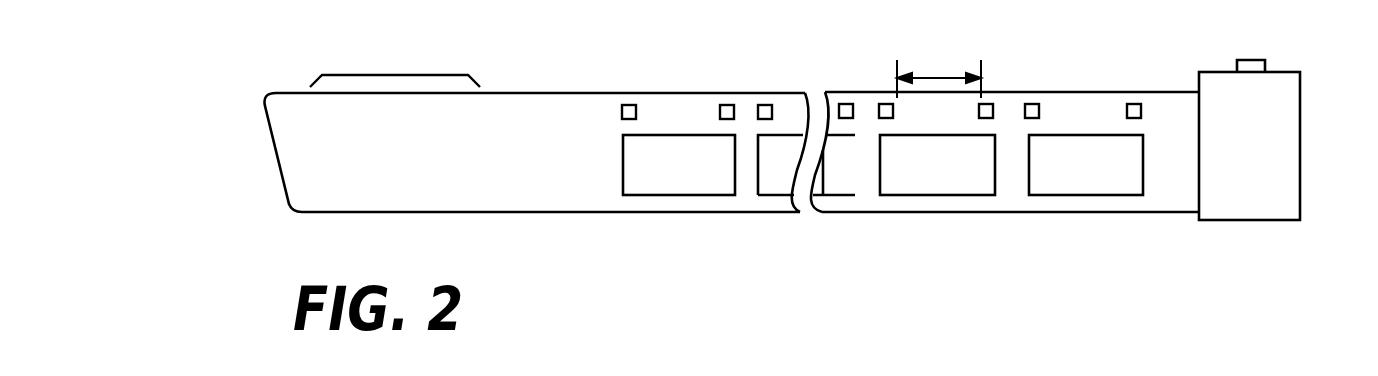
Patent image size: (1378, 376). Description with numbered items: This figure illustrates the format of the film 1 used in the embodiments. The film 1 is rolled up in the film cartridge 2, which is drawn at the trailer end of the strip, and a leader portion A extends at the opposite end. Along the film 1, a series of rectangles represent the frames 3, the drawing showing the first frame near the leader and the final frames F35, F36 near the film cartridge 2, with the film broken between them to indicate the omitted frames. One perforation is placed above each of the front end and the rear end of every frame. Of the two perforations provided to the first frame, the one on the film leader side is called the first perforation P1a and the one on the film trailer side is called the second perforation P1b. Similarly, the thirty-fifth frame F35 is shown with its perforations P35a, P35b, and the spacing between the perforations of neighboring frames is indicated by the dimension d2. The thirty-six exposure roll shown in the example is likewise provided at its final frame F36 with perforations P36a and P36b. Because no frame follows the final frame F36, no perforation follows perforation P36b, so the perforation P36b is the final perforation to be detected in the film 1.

The film 1 is at (547, 93).
The film cartridge 2 is at (1287, 72).
The frames 3 is at (623, 166).
The leader portion of film A is at (395, 62).
The first perforation P1a is at (638, 111).
The second perforation P1b is at (727, 105).
The perforation for frame 35 P35a is at (888, 104).
The perforation for frame 35 P35b is at (988, 104).
The perforation of final frame P36a is at (1031, 104).
The final perforation P36b is at (1141, 108).
The perforation spacing d2 is at (939, 71).
The frame 35 F35 is at (937, 165).
The final frame F36 is at (1086, 165).